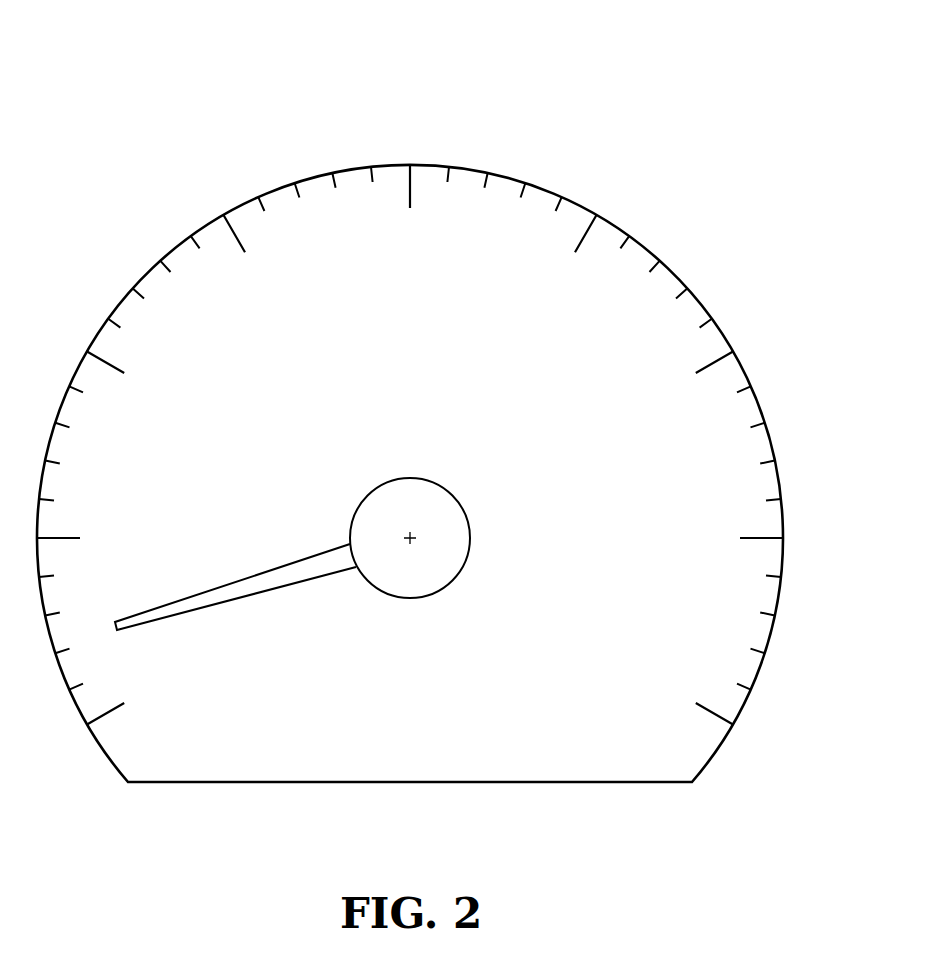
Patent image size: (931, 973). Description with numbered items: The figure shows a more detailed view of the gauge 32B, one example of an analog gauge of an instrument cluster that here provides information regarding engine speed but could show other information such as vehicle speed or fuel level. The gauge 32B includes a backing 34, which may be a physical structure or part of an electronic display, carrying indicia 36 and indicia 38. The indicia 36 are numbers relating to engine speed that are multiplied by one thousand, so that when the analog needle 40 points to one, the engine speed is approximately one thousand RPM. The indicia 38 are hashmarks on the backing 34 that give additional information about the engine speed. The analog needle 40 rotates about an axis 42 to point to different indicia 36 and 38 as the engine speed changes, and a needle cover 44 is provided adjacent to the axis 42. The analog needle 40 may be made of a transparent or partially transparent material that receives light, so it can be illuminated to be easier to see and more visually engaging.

The gauge 32B is at (469, 90).
The backing 34 is at (603, 365).
The indicia 36 is at (170, 377).
The indicia 38 is at (98, 358).
The analog needle 40 is at (228, 592).
The axis 42 is at (413, 536).
The needle cover 44 is at (445, 558).